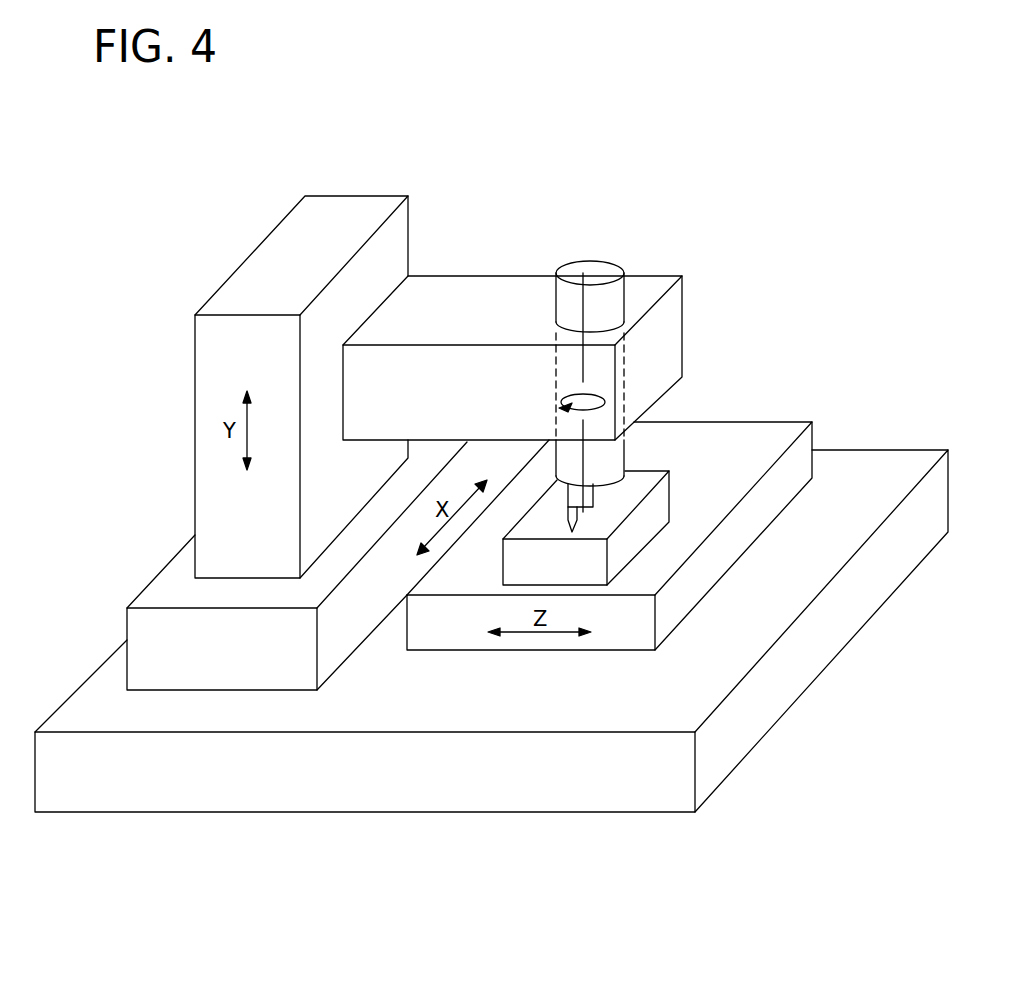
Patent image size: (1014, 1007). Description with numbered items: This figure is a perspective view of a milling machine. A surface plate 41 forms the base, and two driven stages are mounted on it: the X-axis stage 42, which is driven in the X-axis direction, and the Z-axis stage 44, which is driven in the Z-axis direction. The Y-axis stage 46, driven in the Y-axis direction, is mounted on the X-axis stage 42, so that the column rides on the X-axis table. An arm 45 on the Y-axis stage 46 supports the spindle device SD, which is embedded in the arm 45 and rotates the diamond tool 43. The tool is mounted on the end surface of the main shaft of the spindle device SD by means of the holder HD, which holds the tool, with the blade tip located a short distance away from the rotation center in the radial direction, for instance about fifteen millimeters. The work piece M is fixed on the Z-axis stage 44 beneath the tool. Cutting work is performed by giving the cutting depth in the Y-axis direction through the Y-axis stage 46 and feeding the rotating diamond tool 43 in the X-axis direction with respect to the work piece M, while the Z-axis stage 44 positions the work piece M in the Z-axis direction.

The surface plate 41 is at (438, 785).
The X-axis stage 42 is at (142, 623).
The diamond tool 43 is at (580, 519).
The Z-axis stage 44 is at (765, 433).
The arm 45 is at (463, 287).
The Y-axis stage 46 is at (195, 418).
The spindle device SD is at (615, 305).
The holder HD is at (562, 459).
The work piece M is at (645, 483).